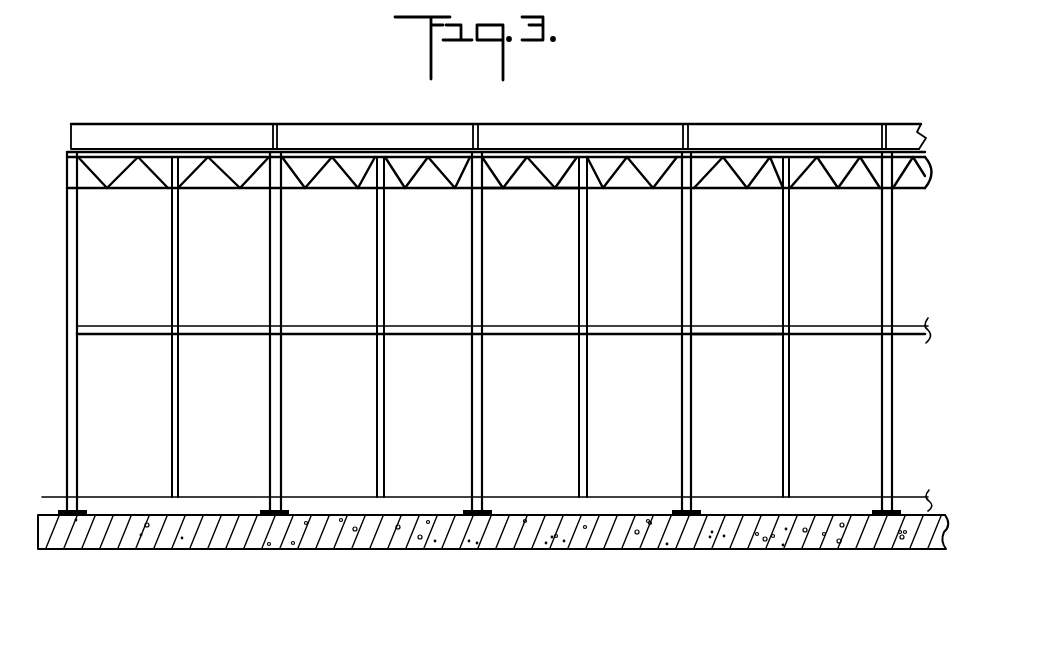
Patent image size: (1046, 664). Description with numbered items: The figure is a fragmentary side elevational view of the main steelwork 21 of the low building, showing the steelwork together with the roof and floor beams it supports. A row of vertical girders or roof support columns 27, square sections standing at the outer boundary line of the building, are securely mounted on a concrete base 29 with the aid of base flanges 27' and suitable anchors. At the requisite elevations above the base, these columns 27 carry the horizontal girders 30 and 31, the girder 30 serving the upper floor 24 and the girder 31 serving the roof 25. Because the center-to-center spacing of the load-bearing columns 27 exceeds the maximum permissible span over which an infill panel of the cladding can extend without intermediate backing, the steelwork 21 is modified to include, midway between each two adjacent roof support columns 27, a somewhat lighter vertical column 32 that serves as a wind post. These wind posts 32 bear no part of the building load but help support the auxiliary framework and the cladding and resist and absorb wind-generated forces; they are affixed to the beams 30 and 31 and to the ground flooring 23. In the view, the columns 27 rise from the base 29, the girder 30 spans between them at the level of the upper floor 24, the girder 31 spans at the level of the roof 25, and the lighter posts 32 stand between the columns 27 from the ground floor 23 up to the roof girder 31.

The main steelwork 21 is at (894, 280).
The floor 23 is at (757, 458).
The floor 24 is at (737, 331).
The roof 25 is at (656, 190).
The vertical girders or roof support columns 27 is at (479, 333).
The base flanges 27' is at (450, 482).
The concrete base 29 is at (388, 550).
The horizontal girder 30 is at (528, 325).
The horizontal girder 31 is at (521, 190).
The vertical column or wind post 32 is at (178, 250).